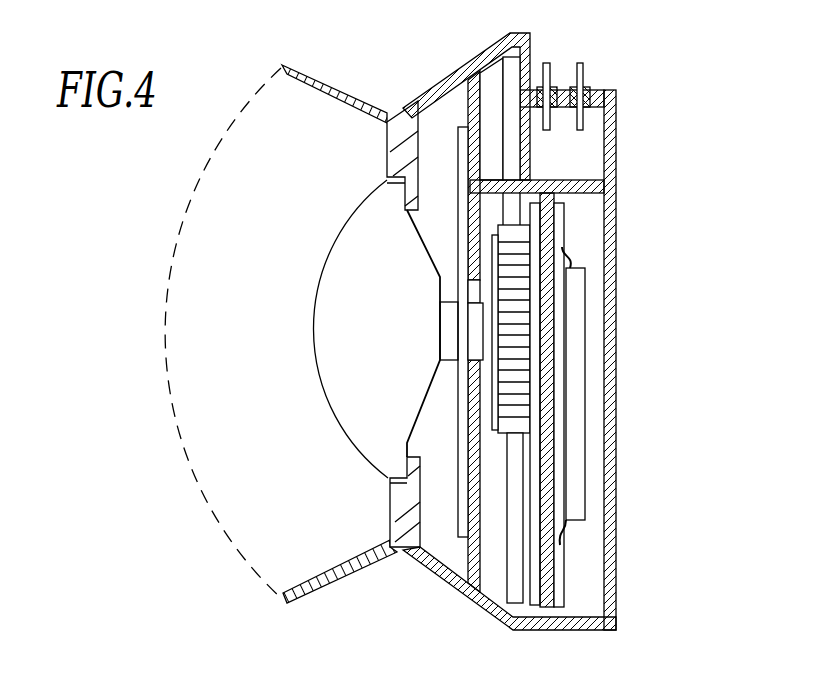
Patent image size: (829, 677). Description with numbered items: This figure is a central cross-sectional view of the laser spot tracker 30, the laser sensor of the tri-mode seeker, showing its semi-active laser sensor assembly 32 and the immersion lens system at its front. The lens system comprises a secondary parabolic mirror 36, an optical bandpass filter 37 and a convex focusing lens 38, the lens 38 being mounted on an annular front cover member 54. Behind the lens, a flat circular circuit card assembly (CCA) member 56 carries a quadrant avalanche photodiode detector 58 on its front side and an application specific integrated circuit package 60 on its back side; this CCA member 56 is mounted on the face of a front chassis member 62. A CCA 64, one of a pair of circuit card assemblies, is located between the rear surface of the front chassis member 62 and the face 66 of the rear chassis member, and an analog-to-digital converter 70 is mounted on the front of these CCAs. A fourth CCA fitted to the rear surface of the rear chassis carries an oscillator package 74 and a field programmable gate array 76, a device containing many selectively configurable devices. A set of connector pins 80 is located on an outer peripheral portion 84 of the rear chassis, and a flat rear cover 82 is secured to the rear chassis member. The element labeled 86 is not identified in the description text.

The laser spot tracker 30 is at (264, 345).
The semi-active laser sensor assembly 32 is at (411, 577).
The secondary parabolic mirror 36 is at (175, 297).
The optical bandpass filter 37 is at (307, 72).
The convex focusing lens 38 is at (346, 441).
The annular front cover member 54 is at (395, 142).
The circuit card assembly (CCA) member 56 is at (460, 160).
The quadrant avalanche photodiode detector (QAPD) 58 is at (450, 342).
The application specific integrated circuit (ASIC) package 60 is at (477, 315).
The front chassis member 62 is at (478, 68).
The CCA 64 is at (533, 184).
The face of rear chassis member 66 is at (547, 553).
The analog-to-digital (A/D) converter 70 is at (513, 422).
The oscillator (OSC) package 74 is at (537, 497).
The field programmable gate array (FPGA) 76 is at (557, 583).
The connector pins 80 is at (575, 438).
The flat rear cover 82 is at (567, 64).
The outer peripheral portion of rear chassis 84 is at (596, 110).
The rear wall 86 is at (611, 361).